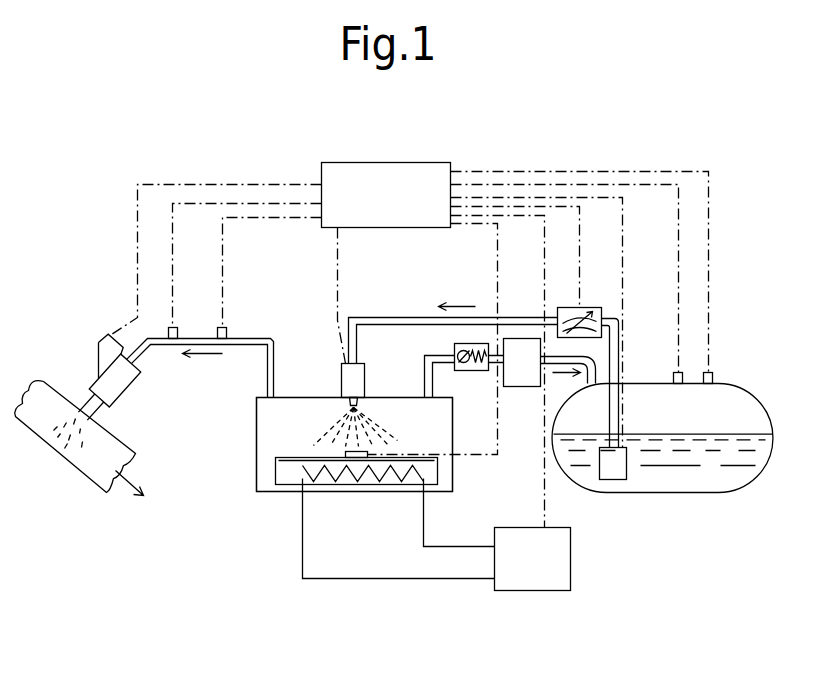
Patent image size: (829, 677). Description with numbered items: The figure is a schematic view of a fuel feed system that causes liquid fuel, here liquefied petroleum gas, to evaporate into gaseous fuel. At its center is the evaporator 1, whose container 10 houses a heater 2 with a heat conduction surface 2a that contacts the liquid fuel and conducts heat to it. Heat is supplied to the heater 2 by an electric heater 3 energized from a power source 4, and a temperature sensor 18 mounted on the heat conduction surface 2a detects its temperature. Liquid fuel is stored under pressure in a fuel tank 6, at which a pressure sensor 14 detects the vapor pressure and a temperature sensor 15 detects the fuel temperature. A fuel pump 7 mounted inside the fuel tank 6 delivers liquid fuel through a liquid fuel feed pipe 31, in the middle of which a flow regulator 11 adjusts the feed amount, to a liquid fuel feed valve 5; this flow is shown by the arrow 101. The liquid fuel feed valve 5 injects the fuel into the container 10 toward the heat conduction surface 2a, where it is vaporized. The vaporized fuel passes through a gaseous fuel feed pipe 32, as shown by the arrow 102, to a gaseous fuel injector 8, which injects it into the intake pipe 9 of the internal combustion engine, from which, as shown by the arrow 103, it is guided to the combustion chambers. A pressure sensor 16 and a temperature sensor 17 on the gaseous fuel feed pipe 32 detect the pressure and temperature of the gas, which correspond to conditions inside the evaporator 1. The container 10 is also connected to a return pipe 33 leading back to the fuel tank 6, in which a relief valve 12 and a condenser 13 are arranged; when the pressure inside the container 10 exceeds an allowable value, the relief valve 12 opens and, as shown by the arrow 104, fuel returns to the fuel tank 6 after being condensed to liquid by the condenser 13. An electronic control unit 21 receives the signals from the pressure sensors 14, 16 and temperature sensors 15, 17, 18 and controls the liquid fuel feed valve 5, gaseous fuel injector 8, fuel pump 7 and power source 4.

The evaporator 1 is at (256, 413).
The heater 2 is at (275, 472).
The heat conduction surface 2a is at (275, 457).
The electric heater 3 is at (298, 478).
The power source 4 is at (532, 591).
The liquid fuel feed valve 5 is at (341, 382).
The fuel tank 6 is at (755, 480).
The fuel pump 7 is at (627, 475).
The gaseous fuel injector 8 is at (89, 385).
The intake pipe 9 is at (87, 484).
The container 10 is at (452, 472).
The flow regulator 11 is at (588, 307).
The relief valve 12 is at (454, 350).
The condenser 13 is at (518, 387).
The pressure sensor 14 is at (673, 376).
The temperature sensor 15 is at (712, 376).
The pressure sensor 16 is at (177, 327).
The temperature sensor 17 is at (226, 327).
The temperature sensor 18 is at (357, 452).
The electronic control unit 21 is at (397, 162).
The liquid fuel feed pipe 31 is at (395, 317).
The gaseous fuel feed pipe 32 is at (260, 338).
The return pipe 33 is at (424, 373).
The arrow 101 is at (463, 305).
The arrow 102 is at (205, 353).
The arrow 103 is at (125, 487).
The arrow 104 is at (563, 375).